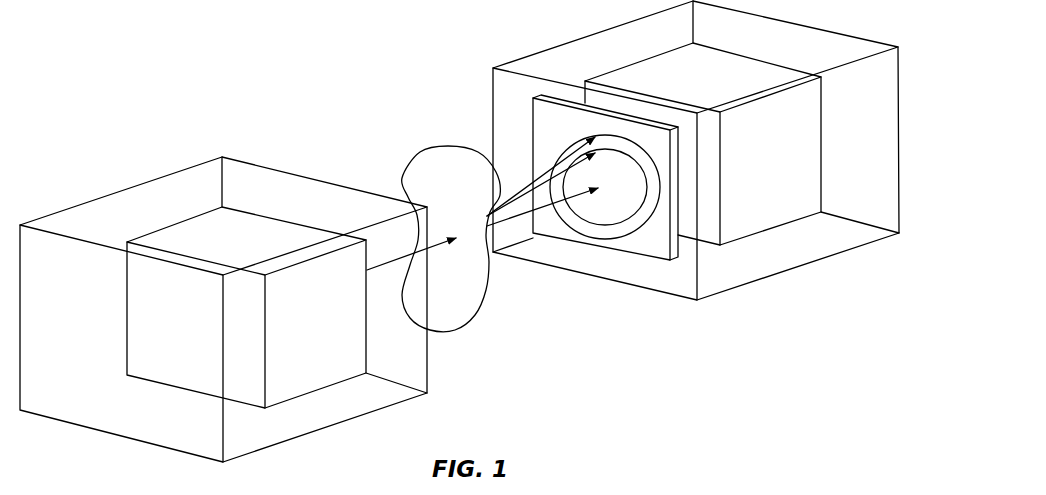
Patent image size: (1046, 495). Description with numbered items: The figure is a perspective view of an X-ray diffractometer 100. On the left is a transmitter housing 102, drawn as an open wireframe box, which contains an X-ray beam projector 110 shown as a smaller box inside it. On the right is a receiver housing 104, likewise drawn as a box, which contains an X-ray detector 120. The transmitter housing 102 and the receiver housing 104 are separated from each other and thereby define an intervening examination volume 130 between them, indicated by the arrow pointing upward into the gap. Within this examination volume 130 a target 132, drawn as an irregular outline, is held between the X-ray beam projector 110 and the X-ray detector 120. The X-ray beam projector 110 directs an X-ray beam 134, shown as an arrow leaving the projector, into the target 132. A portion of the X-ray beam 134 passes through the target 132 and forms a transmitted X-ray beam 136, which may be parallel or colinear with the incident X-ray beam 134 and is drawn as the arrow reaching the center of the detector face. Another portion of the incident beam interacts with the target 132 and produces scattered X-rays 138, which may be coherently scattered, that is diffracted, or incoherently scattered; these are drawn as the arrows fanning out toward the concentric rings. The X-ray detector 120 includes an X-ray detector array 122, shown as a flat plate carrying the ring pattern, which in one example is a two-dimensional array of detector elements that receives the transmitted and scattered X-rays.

The X-ray diffractometer 100 is at (288, 46).
The transmitter housing 102 is at (118, 192).
The receiver housing 104 is at (800, 267).
The X-ray beam projector 110 is at (332, 337).
The X-ray detector 120 is at (789, 173).
The X-ray detector array 122 is at (647, 248).
The examination volume 130 is at (512, 343).
The target 132 is at (459, 194).
The X-ray beam 134 is at (397, 261).
The transmitted X-ray beam 136 is at (547, 202).
The scattered X-rays 138 is at (543, 170).